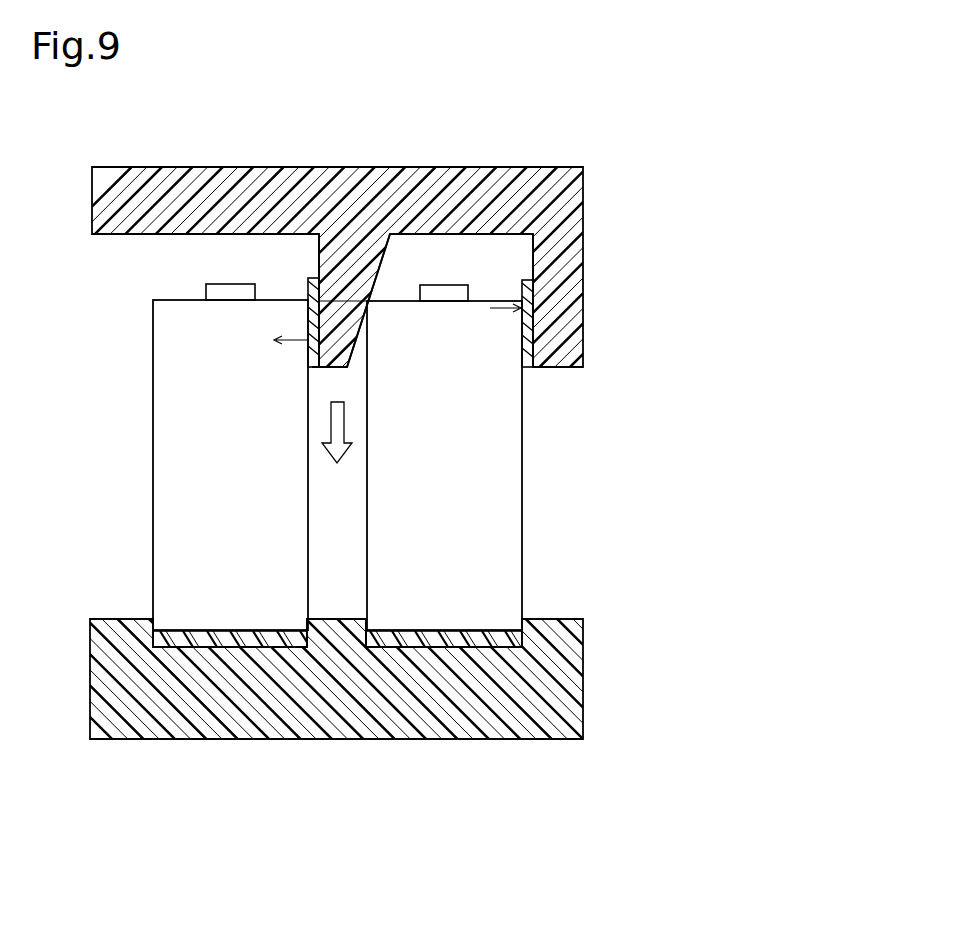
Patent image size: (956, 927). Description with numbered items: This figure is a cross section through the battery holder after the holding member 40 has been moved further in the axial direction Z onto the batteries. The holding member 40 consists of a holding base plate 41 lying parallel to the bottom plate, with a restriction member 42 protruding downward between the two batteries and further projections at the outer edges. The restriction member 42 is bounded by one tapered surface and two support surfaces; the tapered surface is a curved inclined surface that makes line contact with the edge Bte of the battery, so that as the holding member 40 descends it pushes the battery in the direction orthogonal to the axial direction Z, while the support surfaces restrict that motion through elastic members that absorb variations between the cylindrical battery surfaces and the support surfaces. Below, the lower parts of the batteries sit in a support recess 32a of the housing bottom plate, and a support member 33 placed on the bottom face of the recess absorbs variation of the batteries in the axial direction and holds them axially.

The holding member 40 is at (408, 256).
The holding base plate 41 is at (404, 167).
The restriction member 42 is at (320, 252).
The edge of the battery Bte is at (342, 305).
The axial direction Z is at (348, 410).
The support recess 32a is at (412, 636).
The support member 33 is at (490, 636).